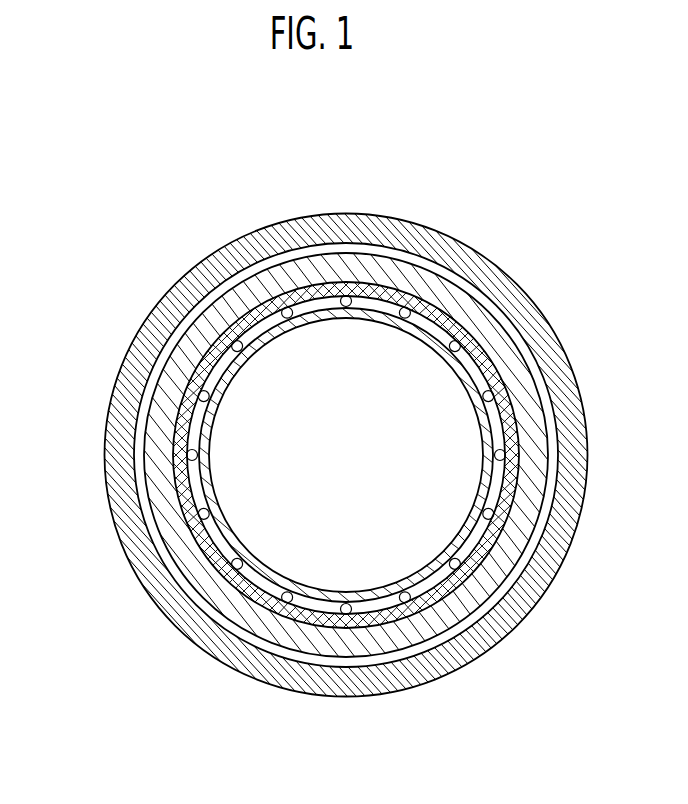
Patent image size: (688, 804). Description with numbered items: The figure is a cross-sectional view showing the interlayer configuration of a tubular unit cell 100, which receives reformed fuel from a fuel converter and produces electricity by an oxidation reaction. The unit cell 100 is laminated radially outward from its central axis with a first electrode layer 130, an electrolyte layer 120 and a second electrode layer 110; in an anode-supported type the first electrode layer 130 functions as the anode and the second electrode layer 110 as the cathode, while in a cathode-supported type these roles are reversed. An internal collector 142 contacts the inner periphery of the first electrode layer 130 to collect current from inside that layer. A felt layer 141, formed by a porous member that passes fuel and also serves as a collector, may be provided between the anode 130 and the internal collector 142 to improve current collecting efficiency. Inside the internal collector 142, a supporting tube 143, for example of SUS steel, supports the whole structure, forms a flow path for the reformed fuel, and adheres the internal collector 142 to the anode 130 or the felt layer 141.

The unit cell 100 is at (357, 163).
The second electrode layer 110 is at (343, 223).
The electrolyte layer 120 is at (282, 258).
The first electrode layer 130 is at (237, 302).
The felt layer 141 is at (172, 422).
The internal collector 142 is at (188, 455).
The supporting tube 143 is at (207, 482).